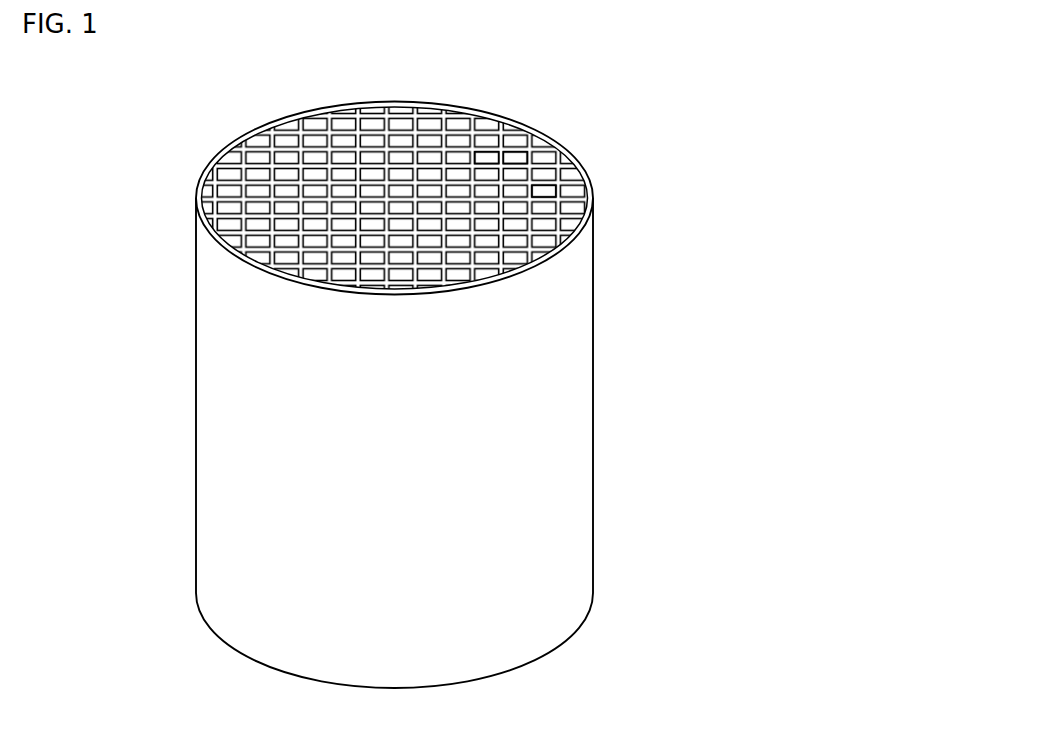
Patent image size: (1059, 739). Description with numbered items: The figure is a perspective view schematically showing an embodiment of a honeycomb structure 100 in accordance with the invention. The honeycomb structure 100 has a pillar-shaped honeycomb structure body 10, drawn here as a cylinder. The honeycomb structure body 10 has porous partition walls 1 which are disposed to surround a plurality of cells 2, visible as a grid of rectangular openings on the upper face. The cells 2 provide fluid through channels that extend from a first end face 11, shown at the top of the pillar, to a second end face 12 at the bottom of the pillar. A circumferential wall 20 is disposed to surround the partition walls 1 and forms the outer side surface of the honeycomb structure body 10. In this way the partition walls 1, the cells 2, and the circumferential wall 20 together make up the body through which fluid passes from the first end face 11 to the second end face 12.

The honeycomb structure 100 is at (730, 50).
The honeycomb structure body 10 is at (598, 244).
The first end face 11 is at (273, 122).
The second end face 12 is at (223, 650).
The partition wall 1 is at (498, 165).
The cell 2 is at (543, 190).
The circumferential wall 20 is at (562, 333).